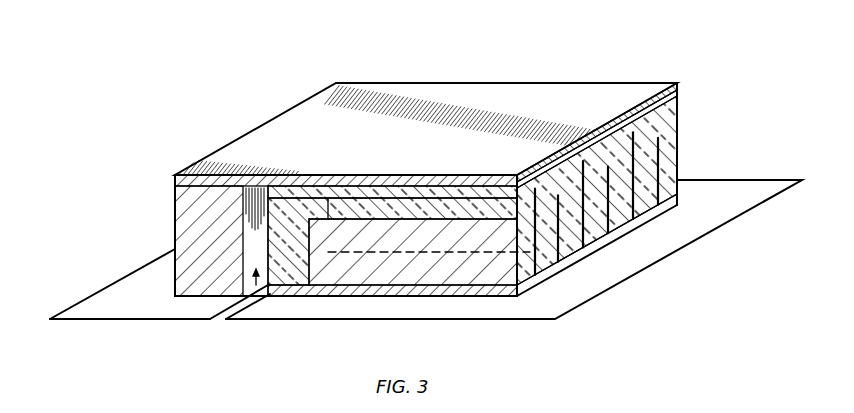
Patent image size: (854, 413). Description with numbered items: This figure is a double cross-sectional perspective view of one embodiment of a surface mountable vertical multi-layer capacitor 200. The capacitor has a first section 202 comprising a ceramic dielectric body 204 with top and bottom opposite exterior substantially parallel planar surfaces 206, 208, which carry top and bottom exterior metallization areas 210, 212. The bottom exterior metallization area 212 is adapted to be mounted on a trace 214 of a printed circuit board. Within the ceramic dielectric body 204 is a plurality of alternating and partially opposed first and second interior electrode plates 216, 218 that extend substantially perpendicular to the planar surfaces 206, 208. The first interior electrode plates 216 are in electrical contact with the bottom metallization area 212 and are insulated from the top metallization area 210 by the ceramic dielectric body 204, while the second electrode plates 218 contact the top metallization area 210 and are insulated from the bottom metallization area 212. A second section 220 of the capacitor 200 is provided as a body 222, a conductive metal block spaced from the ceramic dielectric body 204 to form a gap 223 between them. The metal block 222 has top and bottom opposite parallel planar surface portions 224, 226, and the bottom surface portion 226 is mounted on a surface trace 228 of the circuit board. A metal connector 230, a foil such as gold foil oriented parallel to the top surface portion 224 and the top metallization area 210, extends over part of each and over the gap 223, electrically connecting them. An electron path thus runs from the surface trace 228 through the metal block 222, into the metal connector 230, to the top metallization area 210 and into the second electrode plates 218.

The surface mountable vertical multi-layer capacitor 200 is at (209, 46).
The first section 202 is at (729, 135).
The ceramic dielectric body 204 is at (668, 124).
The top exterior planar surface 206 is at (655, 86).
The bottom exterior planar surface 208 is at (634, 224).
The top exterior metallization area 210 is at (681, 99).
The bottom exterior metallization area 212 is at (678, 197).
The trace 214 is at (778, 187).
The first interior electrode plates 216 is at (326, 270).
The second interior electrode plates 218 is at (412, 262).
The second section 220 is at (144, 219).
The body 222 is at (176, 243).
The gap 223 is at (256, 286).
The top exterior planar surface portion 224 is at (204, 176).
The bottom exterior planar surface portion 226 is at (197, 297).
The surface trace 228 is at (84, 302).
The metal connector 230 is at (520, 83).